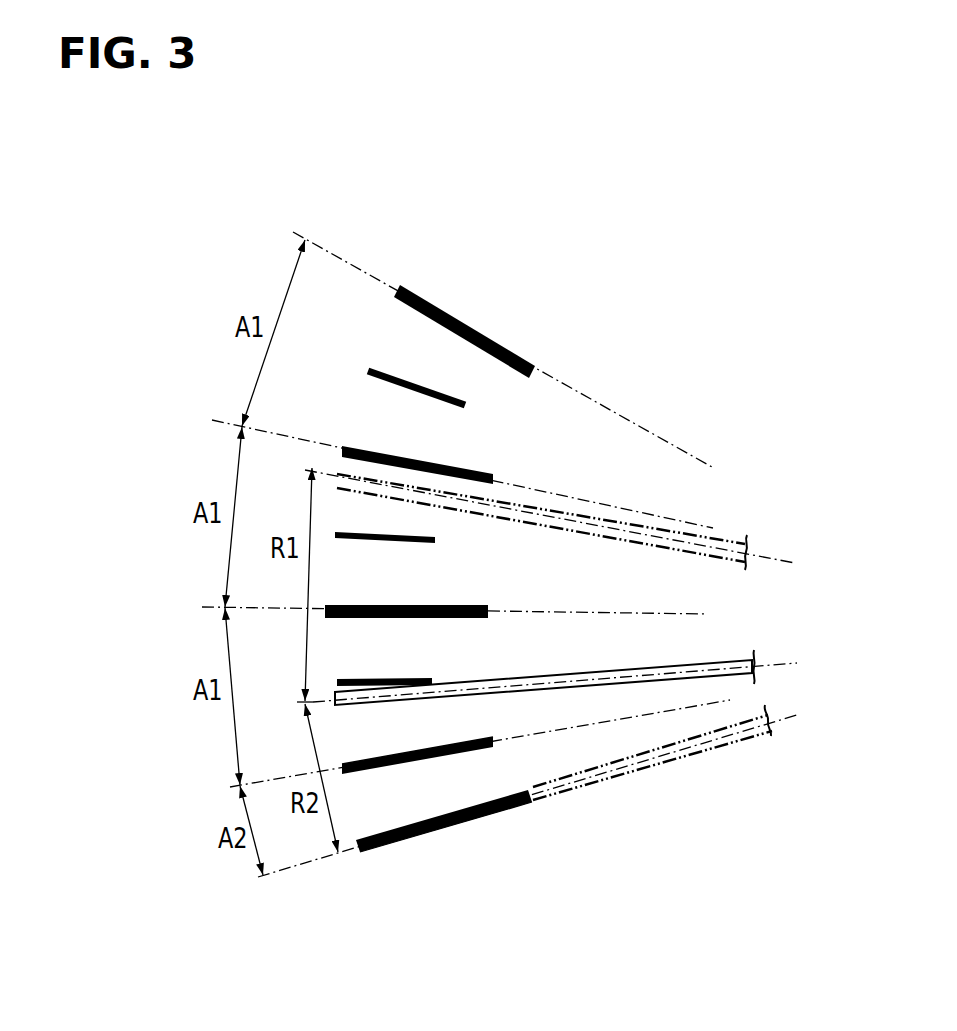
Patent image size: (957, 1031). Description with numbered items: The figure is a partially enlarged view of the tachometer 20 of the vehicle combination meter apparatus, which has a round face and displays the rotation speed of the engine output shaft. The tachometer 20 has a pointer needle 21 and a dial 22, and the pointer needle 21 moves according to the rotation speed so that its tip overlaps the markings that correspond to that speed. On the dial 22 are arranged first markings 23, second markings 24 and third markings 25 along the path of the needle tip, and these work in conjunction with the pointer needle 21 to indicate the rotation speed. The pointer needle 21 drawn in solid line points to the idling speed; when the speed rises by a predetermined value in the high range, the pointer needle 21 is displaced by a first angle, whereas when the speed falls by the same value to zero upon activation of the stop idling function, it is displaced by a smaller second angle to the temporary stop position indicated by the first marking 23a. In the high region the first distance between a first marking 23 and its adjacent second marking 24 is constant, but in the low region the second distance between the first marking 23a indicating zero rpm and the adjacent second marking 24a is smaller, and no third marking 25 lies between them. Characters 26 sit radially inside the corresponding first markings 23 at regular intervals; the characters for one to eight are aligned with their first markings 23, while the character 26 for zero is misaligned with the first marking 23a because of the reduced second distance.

The tachometer 20 is at (460, 239).
The pointer needle 21 is at (717, 540).
The dial 22 is at (390, 800).
The first marking 23 is at (418, 293).
The first marking indicating 0 rpm 23a is at (412, 836).
The second marking 24 is at (372, 448).
The second marking adjacent to the 0 rpm first marking 24a is at (389, 759).
The third marking 25 is at (394, 368).
The character 26 is at (617, 868).